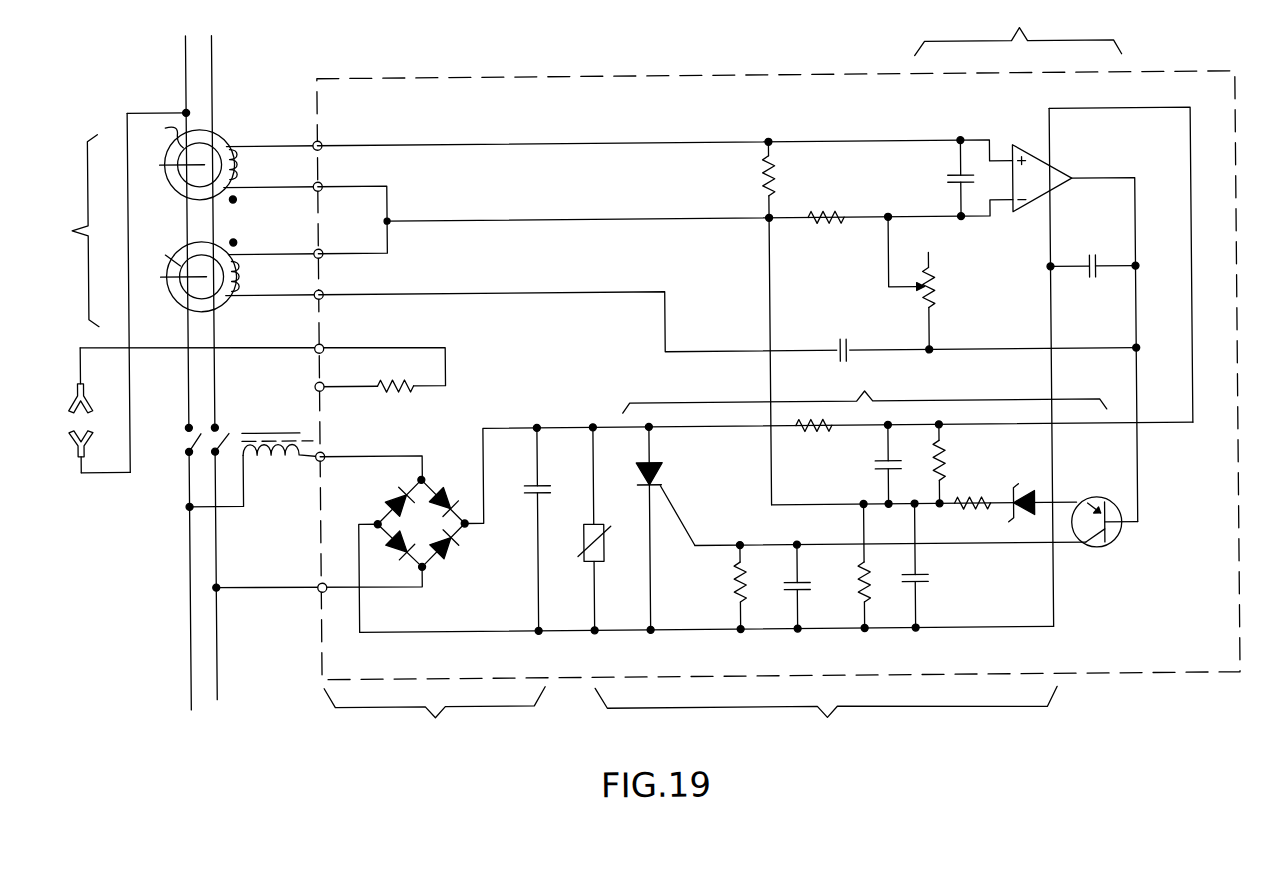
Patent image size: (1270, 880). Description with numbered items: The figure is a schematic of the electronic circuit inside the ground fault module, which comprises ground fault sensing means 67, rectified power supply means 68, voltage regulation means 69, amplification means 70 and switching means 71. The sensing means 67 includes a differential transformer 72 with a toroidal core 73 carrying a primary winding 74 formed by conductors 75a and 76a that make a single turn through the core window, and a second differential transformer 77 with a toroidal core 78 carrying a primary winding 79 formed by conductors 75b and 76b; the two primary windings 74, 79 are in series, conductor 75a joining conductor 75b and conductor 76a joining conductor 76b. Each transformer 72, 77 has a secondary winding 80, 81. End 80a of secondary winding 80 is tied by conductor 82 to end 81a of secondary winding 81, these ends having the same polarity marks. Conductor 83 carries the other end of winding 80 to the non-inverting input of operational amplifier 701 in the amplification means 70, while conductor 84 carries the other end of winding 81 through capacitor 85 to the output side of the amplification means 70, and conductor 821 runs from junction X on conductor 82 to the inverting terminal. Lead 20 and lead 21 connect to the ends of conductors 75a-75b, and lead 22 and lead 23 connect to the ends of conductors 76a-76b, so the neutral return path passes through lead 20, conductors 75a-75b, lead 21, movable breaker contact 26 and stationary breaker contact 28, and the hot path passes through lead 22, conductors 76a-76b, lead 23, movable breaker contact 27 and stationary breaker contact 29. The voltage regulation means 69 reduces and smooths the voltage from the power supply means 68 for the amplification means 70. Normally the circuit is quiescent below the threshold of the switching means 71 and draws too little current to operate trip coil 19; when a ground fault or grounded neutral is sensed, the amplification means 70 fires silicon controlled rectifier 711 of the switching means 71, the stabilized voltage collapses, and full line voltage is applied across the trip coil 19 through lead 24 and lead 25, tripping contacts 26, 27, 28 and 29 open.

The trip coil 19 is at (281, 456).
The lead 20 is at (188, 44).
The lead 21 is at (190, 676).
The lead 22 is at (217, 42).
The lead 23 is at (217, 697).
The lead 24 is at (388, 453).
The lead 25 is at (282, 589).
The neutral movable breaker contact 26 is at (196, 441).
The electrified movable breaker contact 27 is at (224, 428).
The stationary breaker contact 28 is at (187, 450).
The stationary breaker contact 29 is at (220, 458).
The ground fault sensing means 67 is at (241, 290).
The rectified power supply means 68 is at (467, 588).
The voltage regulation means 69 is at (826, 718).
The amplification means 70 is at (778, 341).
The operational amplifier 701 is at (1062, 174).
The switching means 71 is at (880, 497).
The silicon controlled rectifier 711 is at (661, 479).
The differential transformer 72 is at (229, 139).
The toroidal core 73 is at (158, 131).
The primary winding 74 is at (166, 165).
The conductor 75a is at (207, 180).
The conductor 75b is at (185, 292).
The conductor 76a is at (208, 174).
The conductor 76b is at (217, 291).
The second differential transformer 77 is at (196, 248).
The toroidal core 78 is at (157, 254).
The primary winding 79 is at (197, 272).
The secondary winding 80 is at (244, 157).
The end of secondary winding 80a is at (324, 182).
The secondary winding 81 is at (247, 273).
The end of secondary winding 81a is at (322, 256).
The conductor 82 is at (389, 203).
The conductor 821 is at (540, 221).
The conductor 83 is at (517, 143).
The conductor 84 is at (475, 296).
The capacitor 85 is at (840, 348).
The junction X is at (389, 219).